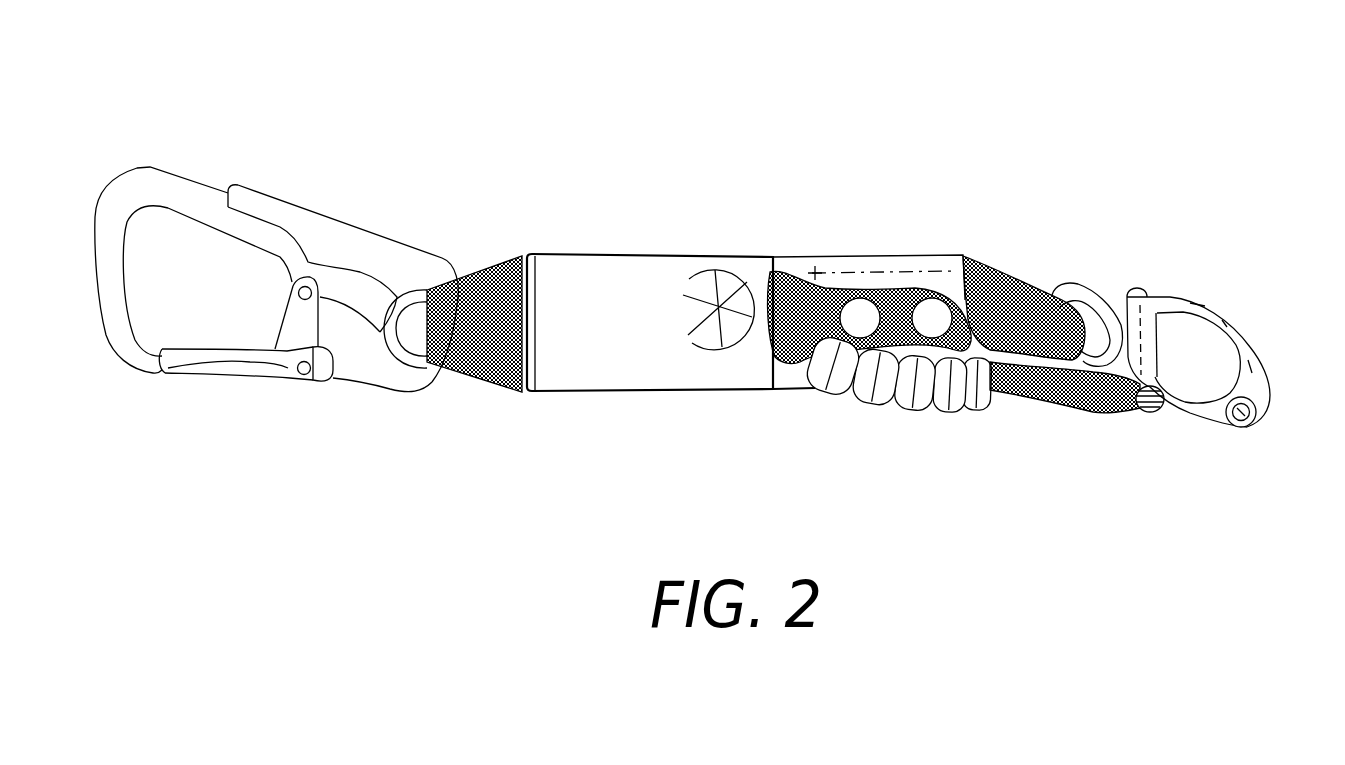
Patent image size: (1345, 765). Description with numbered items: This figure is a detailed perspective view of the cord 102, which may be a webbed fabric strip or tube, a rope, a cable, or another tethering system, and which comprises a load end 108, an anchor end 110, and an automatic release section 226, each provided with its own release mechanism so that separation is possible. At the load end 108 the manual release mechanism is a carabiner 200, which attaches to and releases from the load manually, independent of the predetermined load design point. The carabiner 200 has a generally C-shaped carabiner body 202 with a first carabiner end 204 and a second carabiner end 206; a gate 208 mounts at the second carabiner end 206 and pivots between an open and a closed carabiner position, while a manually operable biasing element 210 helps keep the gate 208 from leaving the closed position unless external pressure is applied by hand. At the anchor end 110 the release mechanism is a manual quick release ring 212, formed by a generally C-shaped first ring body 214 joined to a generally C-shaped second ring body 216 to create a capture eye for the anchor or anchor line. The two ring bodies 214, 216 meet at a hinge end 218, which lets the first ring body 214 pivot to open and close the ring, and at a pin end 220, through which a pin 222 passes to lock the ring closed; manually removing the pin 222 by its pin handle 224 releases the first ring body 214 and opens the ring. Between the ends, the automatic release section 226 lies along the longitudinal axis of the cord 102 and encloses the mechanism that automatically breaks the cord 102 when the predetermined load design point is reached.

The cord 102 is at (654, 100).
The load end 108 is at (485, 273).
The anchor end 110 is at (1000, 268).
The carabiner 200 is at (117, 400).
The carabiner body 202 is at (280, 211).
The first carabiner end 204 is at (95, 218).
The second carabiner end 206 is at (357, 384).
The gate 208 is at (250, 378).
The manually operable biasing element 210 is at (283, 381).
The manual quick release ring 212 is at (1225, 205).
The first ring body 214 is at (1250, 340).
The second ring body 216 is at (1197, 413).
The hinge end 218 is at (1251, 420).
The pin end 220 is at (1136, 285).
The pin 222 is at (1150, 414).
The pin handle 224 is at (918, 408).
The automatic release section 226 is at (878, 258).